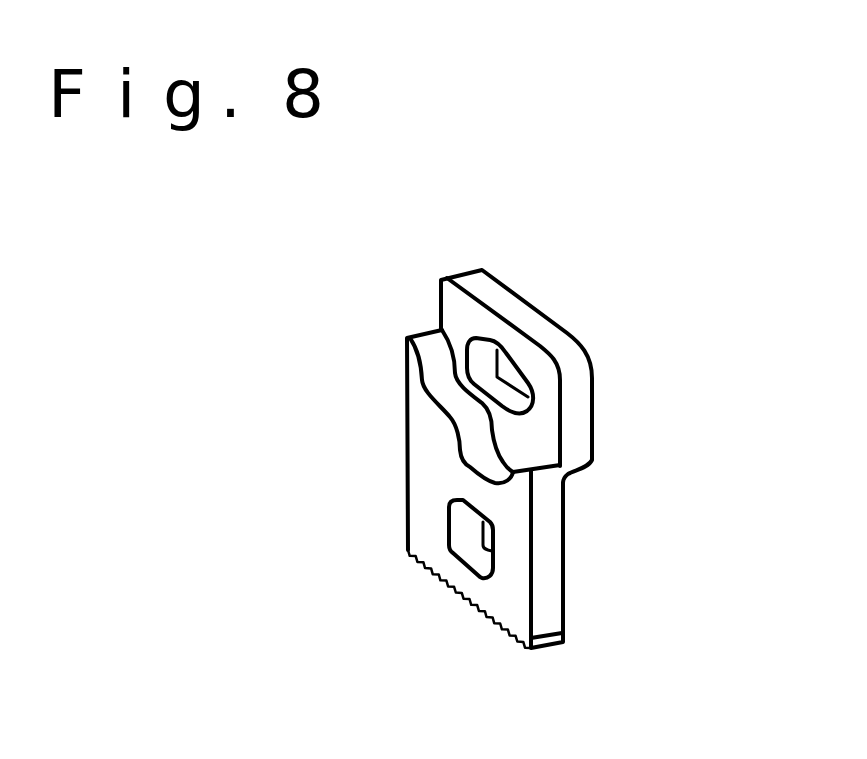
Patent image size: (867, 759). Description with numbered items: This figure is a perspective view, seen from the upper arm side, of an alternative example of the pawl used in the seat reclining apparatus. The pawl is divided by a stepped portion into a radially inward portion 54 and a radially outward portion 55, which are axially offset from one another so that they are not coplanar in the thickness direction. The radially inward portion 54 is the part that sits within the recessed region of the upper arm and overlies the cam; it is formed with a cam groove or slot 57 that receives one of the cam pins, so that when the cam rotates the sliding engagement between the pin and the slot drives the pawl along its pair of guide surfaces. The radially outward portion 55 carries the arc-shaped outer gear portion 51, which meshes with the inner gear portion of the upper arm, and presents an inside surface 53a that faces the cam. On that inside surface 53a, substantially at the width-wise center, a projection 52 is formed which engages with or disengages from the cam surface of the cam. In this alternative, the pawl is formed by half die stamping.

The outer gear portion 51 is at (448, 600).
The projection 52 is at (473, 413).
The inside surface 53a is at (488, 473).
The radially inward portion 54 is at (580, 422).
The radially outward portion 55 is at (547, 605).
The cam groove or slot 57 is at (492, 388).